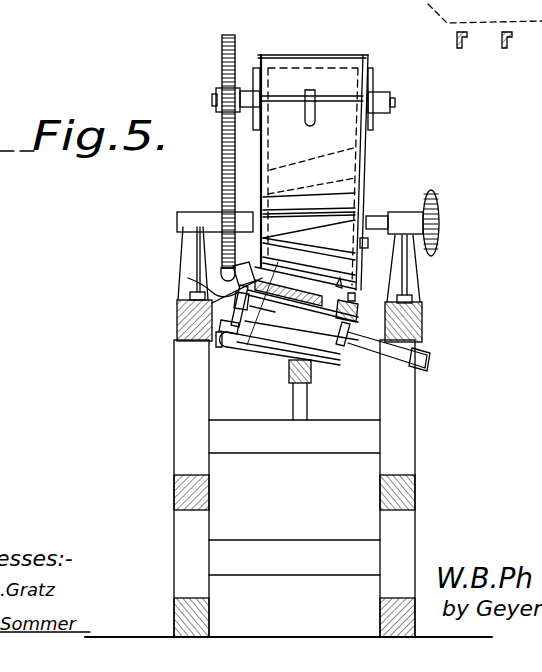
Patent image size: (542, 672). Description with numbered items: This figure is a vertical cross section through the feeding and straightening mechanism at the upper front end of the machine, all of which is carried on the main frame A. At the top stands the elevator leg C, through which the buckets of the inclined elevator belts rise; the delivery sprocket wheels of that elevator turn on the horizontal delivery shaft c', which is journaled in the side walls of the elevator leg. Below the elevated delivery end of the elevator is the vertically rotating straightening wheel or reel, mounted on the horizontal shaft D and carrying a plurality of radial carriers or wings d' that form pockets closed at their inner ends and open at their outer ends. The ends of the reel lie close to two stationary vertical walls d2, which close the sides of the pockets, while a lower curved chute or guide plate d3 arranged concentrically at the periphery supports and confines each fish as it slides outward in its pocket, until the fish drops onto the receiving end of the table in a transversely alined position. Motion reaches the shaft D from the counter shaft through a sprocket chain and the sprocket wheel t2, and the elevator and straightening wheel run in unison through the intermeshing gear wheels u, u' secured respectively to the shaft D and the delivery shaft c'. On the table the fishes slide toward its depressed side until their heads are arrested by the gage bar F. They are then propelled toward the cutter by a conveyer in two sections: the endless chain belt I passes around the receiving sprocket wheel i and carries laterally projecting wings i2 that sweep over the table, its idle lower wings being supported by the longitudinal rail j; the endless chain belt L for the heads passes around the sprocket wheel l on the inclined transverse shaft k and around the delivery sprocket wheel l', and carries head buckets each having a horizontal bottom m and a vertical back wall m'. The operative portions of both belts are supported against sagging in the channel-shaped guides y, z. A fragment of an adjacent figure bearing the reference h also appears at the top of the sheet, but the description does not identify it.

The main frame A is at (288, 488).
The elevator leg C is at (313, 160).
The delivery shaft c' is at (395, 102).
The feed wheel shaft D is at (177, 216).
The gear wheel u is at (213, 158).
The gear wheel u' is at (227, 112).
The sprocket wheel t2 is at (440, 201).
The radial carriers, blades or wings d' is at (309, 251).
The stationary vertical walls d2 is at (366, 262).
The lower curved chute or guide plate d3 is at (350, 288).
The vertical back wall m' is at (294, 281).
The horizontal bottom m is at (301, 315).
The delivery sprocket wheel l' is at (268, 314).
The channel-shaped guide y is at (188, 278).
The receiving sprocket wheel i is at (177, 310).
The carriers, blades or wings i2 is at (266, 327).
The endless chain belt I is at (237, 322).
The gage or bar F is at (435, 312).
The channel-shaped guide z is at (422, 330).
The receiving sprocket wheel l is at (278, 346).
The endless chain belt L is at (348, 362).
The inclined transverse shaft k is at (431, 363).
The longitudinal supporting rail j is at (290, 376).
The guide plate (adjacent figure) h is at (485, 24).